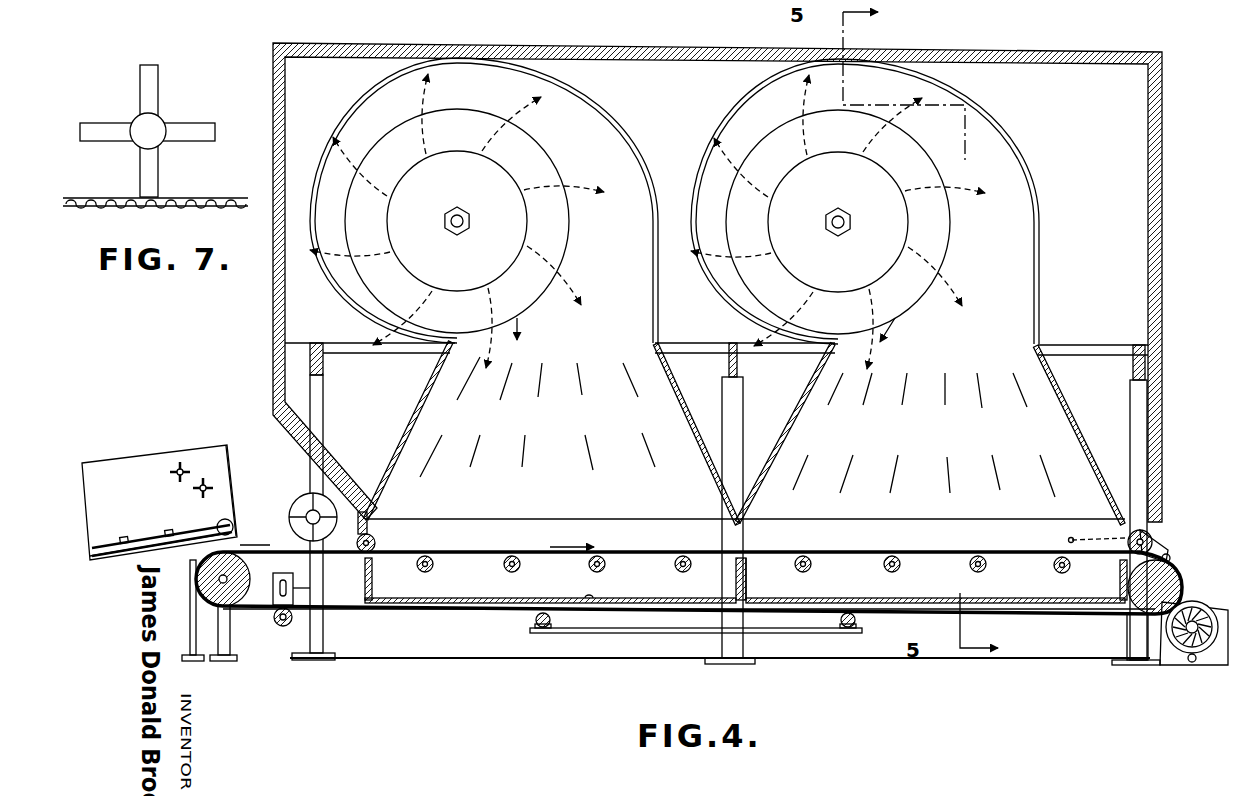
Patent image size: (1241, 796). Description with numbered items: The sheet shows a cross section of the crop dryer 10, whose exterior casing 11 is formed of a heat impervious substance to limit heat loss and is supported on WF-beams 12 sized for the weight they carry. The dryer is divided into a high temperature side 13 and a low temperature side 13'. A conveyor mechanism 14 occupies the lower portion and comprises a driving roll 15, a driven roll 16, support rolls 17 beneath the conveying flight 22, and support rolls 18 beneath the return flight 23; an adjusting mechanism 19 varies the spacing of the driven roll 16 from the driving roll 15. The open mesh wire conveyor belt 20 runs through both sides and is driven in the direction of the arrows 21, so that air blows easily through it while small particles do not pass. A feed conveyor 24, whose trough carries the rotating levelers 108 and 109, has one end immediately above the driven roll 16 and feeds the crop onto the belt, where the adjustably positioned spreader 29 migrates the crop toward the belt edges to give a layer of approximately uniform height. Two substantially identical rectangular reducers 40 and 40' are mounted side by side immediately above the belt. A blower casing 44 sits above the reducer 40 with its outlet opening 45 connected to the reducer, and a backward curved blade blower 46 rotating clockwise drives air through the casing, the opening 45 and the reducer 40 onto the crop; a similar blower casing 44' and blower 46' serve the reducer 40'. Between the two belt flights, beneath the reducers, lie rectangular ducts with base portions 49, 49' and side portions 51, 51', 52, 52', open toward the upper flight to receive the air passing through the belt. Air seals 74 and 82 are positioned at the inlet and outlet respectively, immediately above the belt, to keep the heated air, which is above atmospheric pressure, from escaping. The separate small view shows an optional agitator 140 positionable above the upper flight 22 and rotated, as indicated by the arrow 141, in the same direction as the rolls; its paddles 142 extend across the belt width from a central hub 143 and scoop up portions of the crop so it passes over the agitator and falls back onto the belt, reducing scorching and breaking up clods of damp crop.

In FIG. 4, the crop dryer 10 is at (748, 278).
In FIG. 4, the exterior casing 11 is at (1163, 60).
In FIG. 4, the WF-beams 12 is at (320, 408).
In FIG. 4, the high temperature side 13 is at (488, 172).
In FIG. 4, the low temperature side 13' is at (813, 170).
In FIG. 4, the conveyor mechanism 14 is at (1186, 566).
In FIG. 4, the driving roll 15 is at (1183, 588).
In FIG. 4, the driven roll 16 is at (200, 579).
In FIG. 4, the support rolls 17 is at (432, 569).
In FIG. 4, the support rolls 18 is at (530, 620).
In FIG. 4, the adjusting mechanism 19 is at (278, 608).
In FIG. 4, the conveyor belt 20 is at (670, 551).
In FIG. 4, the arrows 21 is at (242, 546).
In FIG. 7, the conveying flight 22 is at (222, 200).
In FIG. 4, the conveying flight 22 is at (493, 551).
In FIG. 4, the return flight 23 is at (432, 612).
In FIG. 4, the feed conveyor 24 is at (159, 488).
In FIG. 4, the spreader 29 is at (304, 506).
In FIG. 4, the reducer 40 is at (552, 433).
In FIG. 4, the reducer 40' is at (930, 434).
In FIG. 4, the blower casing 44 is at (484, 200).
In FIG. 4, the blower casing 44' is at (887, 201).
In FIG. 4, the outlet opening 45 is at (560, 348).
In FIG. 4, the backward curved blade blower 46 is at (457, 221).
In FIG. 4, the blower 46' is at (848, 222).
In FIG. 4, the base portion 49 is at (550, 625).
In FIG. 4, the base portion 49' is at (935, 621).
In FIG. 4, the side portion 51 is at (388, 579).
In FIG. 4, the side portion 51' is at (764, 579).
In FIG. 4, the side portion 52 is at (724, 579).
In FIG. 4, the side portion 52' is at (1104, 580).
In FIG. 4, the air seal 74 is at (378, 540).
In FIG. 4, the air seal 82 is at (1166, 538).
In FIG. 4, the leveler 108 is at (193, 489).
In FIG. 4, the leveler 109 is at (170, 472).
In FIG. 7, the agitator 140 is at (162, 131).
In FIG. 7, the arrow 141 is at (126, 86).
In FIG. 7, the paddles 142 is at (118, 163).
In FIG. 7, the hub 143 is at (160, 140).